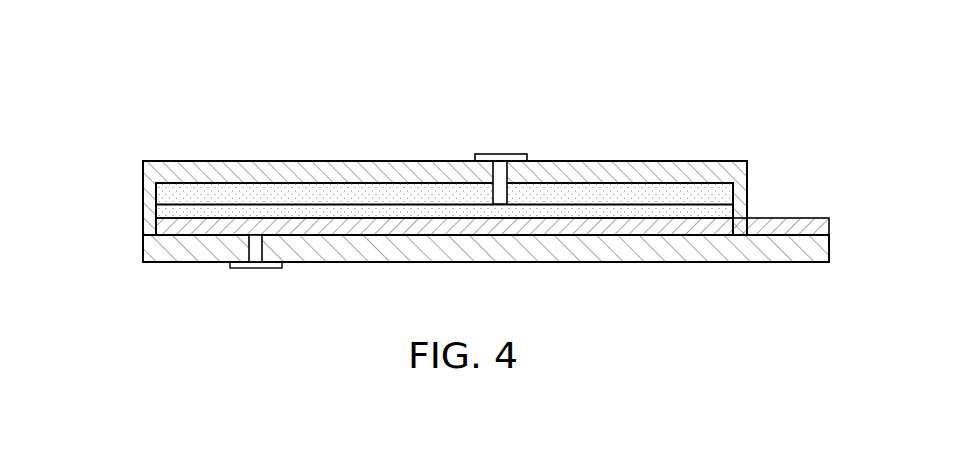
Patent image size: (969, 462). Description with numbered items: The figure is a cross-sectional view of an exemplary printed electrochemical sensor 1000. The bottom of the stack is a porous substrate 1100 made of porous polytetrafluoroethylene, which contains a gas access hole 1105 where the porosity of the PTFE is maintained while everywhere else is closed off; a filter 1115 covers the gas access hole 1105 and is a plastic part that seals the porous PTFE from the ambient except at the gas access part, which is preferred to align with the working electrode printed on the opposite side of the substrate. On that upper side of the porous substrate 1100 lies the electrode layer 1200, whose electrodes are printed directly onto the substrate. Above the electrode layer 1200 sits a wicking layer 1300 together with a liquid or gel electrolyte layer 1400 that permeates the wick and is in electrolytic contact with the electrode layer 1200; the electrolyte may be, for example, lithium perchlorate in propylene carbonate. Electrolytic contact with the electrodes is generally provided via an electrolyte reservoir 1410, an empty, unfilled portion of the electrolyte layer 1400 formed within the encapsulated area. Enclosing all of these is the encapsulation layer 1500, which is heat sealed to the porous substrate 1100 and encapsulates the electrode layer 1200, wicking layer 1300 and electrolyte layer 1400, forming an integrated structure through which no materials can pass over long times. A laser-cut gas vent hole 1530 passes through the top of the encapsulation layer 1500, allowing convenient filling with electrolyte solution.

The sensor 1000 is at (498, 166).
The porous substrate 1100 is at (752, 252).
The gas access hole 1105 is at (255, 245).
The filter 1115 is at (255, 268).
The electrode layer 1200 is at (162, 227).
The wicking layer 1300 is at (393, 212).
The electrolyte layer 1400 is at (550, 212).
The electrolyte reservoir 1410 is at (625, 212).
The encapsulation layer 1500 is at (137, 163).
The gas vent hole 1530 is at (502, 155).